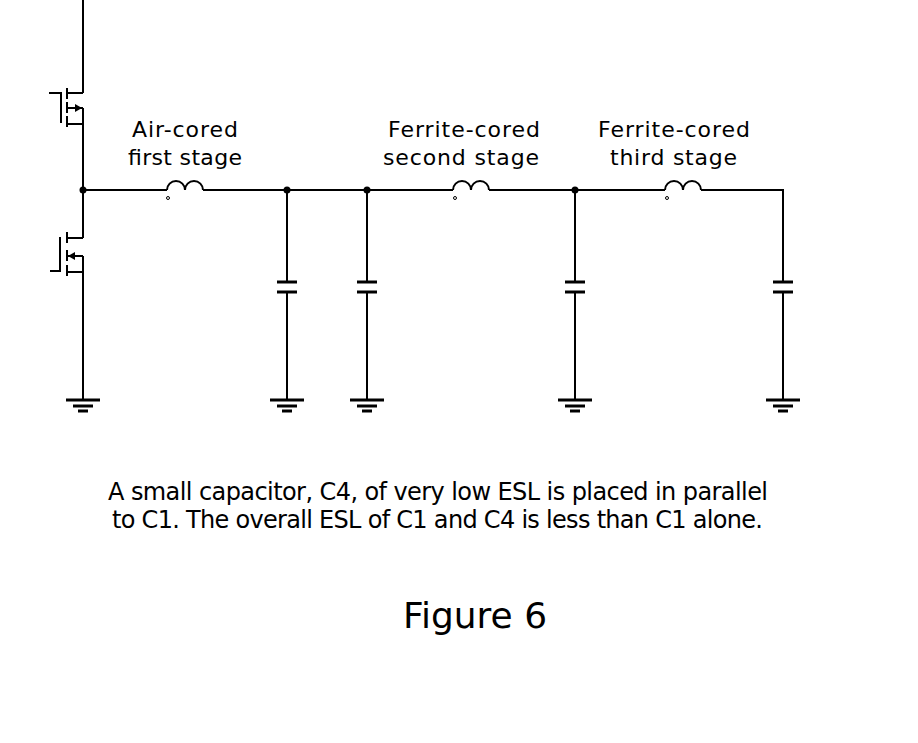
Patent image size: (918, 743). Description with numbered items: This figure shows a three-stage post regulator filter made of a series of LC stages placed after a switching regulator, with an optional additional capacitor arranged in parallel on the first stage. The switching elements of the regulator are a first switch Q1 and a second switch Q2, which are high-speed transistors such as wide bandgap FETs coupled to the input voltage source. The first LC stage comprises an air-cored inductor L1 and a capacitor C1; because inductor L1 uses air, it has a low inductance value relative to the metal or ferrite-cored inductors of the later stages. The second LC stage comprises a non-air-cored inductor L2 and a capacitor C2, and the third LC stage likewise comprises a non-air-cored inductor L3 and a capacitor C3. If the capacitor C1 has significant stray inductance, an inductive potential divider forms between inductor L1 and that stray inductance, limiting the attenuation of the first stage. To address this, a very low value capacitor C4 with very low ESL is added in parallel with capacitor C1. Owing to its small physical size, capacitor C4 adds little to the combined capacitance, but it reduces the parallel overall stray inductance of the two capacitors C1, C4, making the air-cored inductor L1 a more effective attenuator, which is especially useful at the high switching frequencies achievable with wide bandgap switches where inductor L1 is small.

The first switch Q1 is at (63, 271).
The second switch Q2 is at (63, 127).
The inductor L1 is at (185, 207).
The inductor L2 is at (471, 207).
The inductor L3 is at (683, 207).
The capacitor C1 is at (382, 300).
The capacitor C2 is at (590, 300).
The capacitor C3 is at (797, 300).
The additional capacitor C4 is at (302, 300).